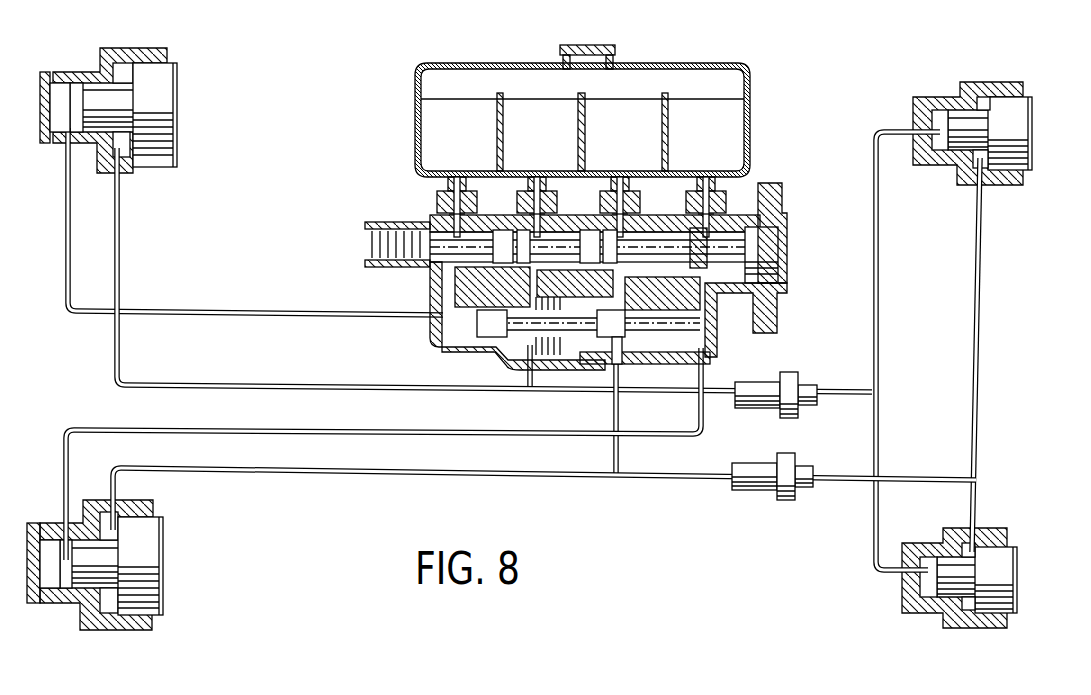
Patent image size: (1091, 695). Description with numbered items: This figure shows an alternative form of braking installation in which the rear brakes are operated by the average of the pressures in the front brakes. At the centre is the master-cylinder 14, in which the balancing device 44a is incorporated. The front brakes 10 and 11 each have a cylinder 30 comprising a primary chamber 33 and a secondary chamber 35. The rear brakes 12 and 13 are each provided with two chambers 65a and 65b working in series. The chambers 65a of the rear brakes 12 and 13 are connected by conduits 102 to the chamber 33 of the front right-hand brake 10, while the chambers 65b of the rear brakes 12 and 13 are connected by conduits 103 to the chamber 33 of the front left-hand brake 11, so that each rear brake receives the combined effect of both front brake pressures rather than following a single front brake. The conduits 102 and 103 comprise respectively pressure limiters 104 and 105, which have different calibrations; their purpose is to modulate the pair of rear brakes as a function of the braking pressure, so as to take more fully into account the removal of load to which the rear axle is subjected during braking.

The front right-hand brake 10 is at (158, 53).
The front left-hand brake 11 is at (138, 623).
The rear brake 12 is at (1016, 84).
The rear brake 13 is at (998, 530).
The master-cylinder 14 is at (596, 216).
The cylinder 30 is at (103, 173).
The primary chamber 33 is at (78, 95).
The secondary chamber 35 is at (122, 70).
The balancing device 44a is at (505, 350).
The chamber 65a is at (937, 112).
The chamber 65b is at (985, 105).
The conduits 102 is at (858, 395).
The conduits 103 is at (950, 485).
The pressure limiter 104 is at (787, 372).
The pressure limiter 105 is at (782, 453).